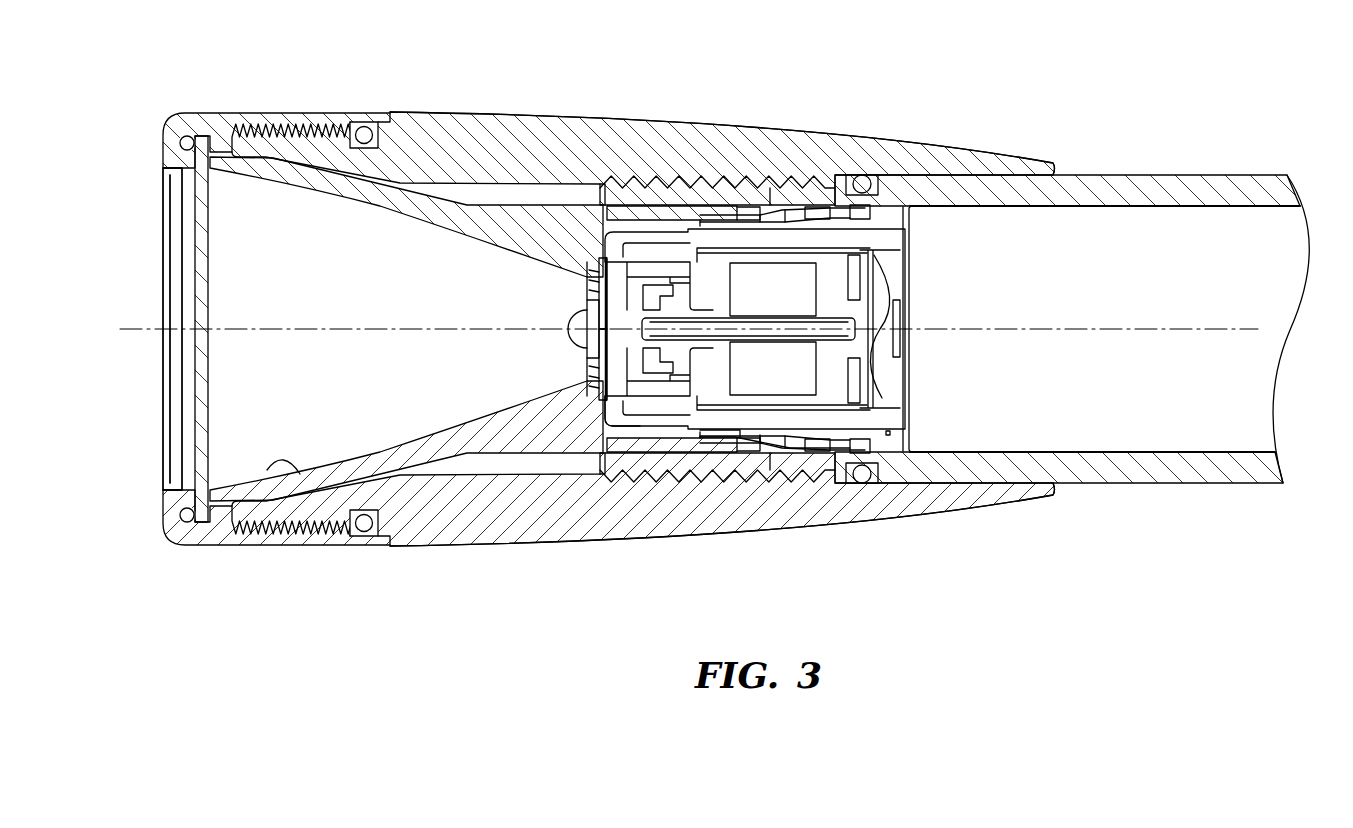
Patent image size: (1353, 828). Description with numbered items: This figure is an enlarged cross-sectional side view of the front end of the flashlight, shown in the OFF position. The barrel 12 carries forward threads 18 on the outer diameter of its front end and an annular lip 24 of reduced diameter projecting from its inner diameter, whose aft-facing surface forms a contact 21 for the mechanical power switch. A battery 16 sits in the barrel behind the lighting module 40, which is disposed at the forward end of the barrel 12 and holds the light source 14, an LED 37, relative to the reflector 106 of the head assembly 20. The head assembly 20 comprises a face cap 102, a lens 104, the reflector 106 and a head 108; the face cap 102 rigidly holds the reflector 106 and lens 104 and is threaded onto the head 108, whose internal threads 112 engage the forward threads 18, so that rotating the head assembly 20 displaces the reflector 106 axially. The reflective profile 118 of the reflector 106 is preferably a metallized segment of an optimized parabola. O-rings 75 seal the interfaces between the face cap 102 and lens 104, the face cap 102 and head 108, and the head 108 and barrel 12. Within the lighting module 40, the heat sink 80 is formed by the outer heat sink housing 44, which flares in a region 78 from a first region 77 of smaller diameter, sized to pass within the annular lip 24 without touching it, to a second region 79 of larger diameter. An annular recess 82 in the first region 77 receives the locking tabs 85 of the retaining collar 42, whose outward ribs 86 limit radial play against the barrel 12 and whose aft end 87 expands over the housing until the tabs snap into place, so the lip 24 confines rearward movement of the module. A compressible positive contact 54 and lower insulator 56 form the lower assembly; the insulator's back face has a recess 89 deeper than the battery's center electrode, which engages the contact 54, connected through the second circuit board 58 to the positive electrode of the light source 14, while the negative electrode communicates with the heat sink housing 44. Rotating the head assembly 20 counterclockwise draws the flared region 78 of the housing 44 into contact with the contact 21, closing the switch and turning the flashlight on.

The barrel 12 is at (1150, 190).
The light source 14 is at (572, 318).
The battery 16 is at (1125, 435).
The forward threads 18 is at (585, 270).
The head assembly 20 is at (565, 111).
The contact 21 is at (790, 214).
The annular lip 24 is at (773, 210).
The LED 37 is at (572, 345).
The lighting module 40 is at (755, 217).
The retaining collar 42 is at (650, 214).
The heat sink housing 44 is at (632, 433).
The compressible positive contact 54 is at (897, 365).
The lower insulator 56 is at (890, 441).
The second circuit board 58 is at (662, 345).
The O-ring 75 is at (182, 515).
The first region 77 is at (772, 228).
The flared region 78 is at (824, 212).
The second region 79 is at (866, 210).
The heat sink 80 is at (600, 433).
The annular recess 82 is at (668, 225).
The locking tabs 85 is at (710, 438).
The ribs 86 is at (626, 204).
The aft end 87 is at (722, 214).
The recess 89 is at (895, 268).
The face cap 102 is at (262, 120).
The lens 104 is at (210, 310).
The reflector 106 is at (320, 181).
The head 108 is at (408, 125).
The threads 112 is at (785, 456).
The reflective profile 118 is at (283, 472).